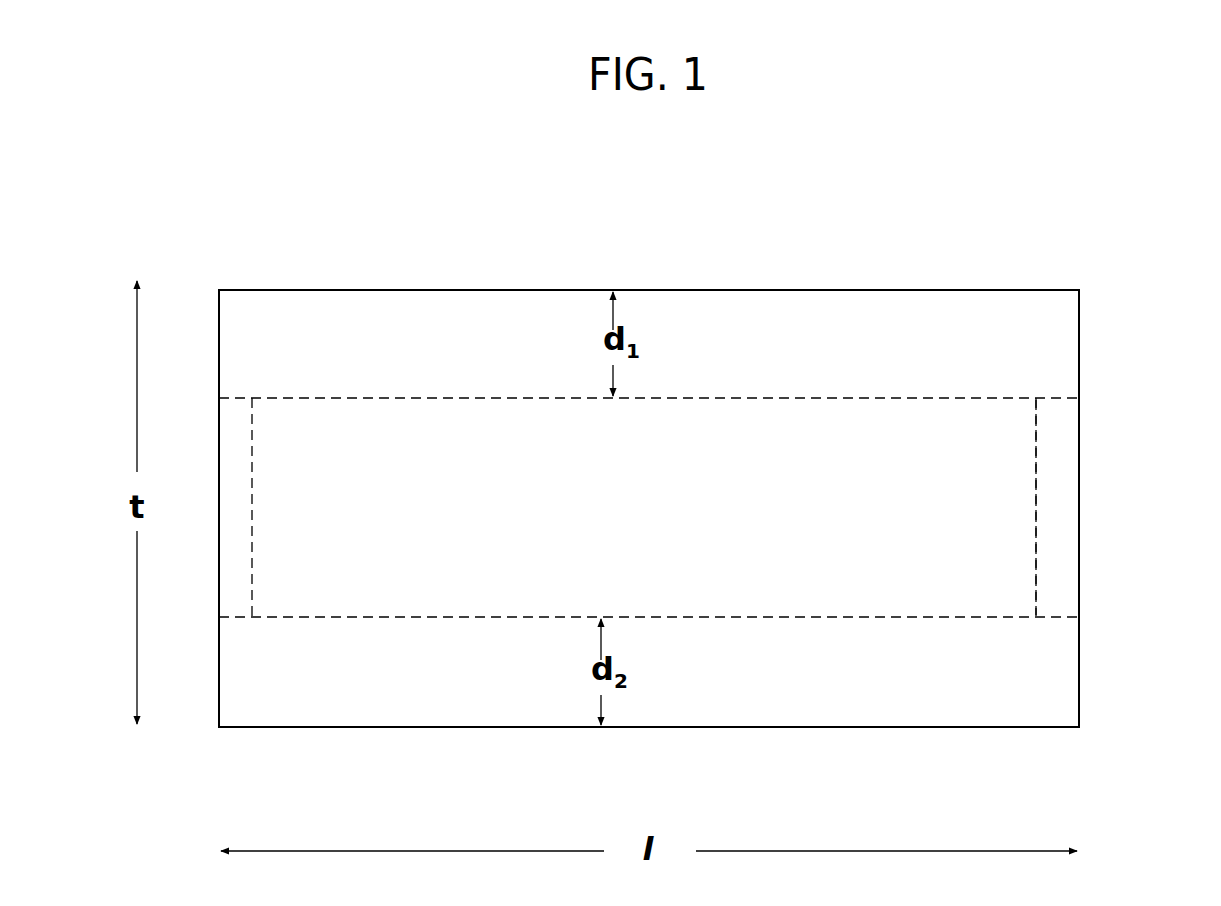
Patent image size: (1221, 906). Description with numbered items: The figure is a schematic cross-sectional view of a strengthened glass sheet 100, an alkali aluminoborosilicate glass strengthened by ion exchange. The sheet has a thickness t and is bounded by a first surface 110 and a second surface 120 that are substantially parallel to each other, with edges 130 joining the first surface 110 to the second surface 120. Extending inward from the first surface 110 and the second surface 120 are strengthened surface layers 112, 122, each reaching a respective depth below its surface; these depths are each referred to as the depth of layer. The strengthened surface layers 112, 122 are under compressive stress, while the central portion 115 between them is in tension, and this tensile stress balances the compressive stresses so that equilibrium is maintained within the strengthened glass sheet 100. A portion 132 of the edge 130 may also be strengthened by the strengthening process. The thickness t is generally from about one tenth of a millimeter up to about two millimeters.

The strengthened glass sheet 100 is at (626, 187).
The first surface 110 is at (303, 289).
The strengthened surface layer 112 is at (649, 361).
The central portion 115 is at (644, 507).
The second surface 120 is at (649, 761).
The strengthened surface layer 122 is at (649, 652).
The edge 130 is at (1092, 694).
The portion of edge 132 is at (1066, 446).